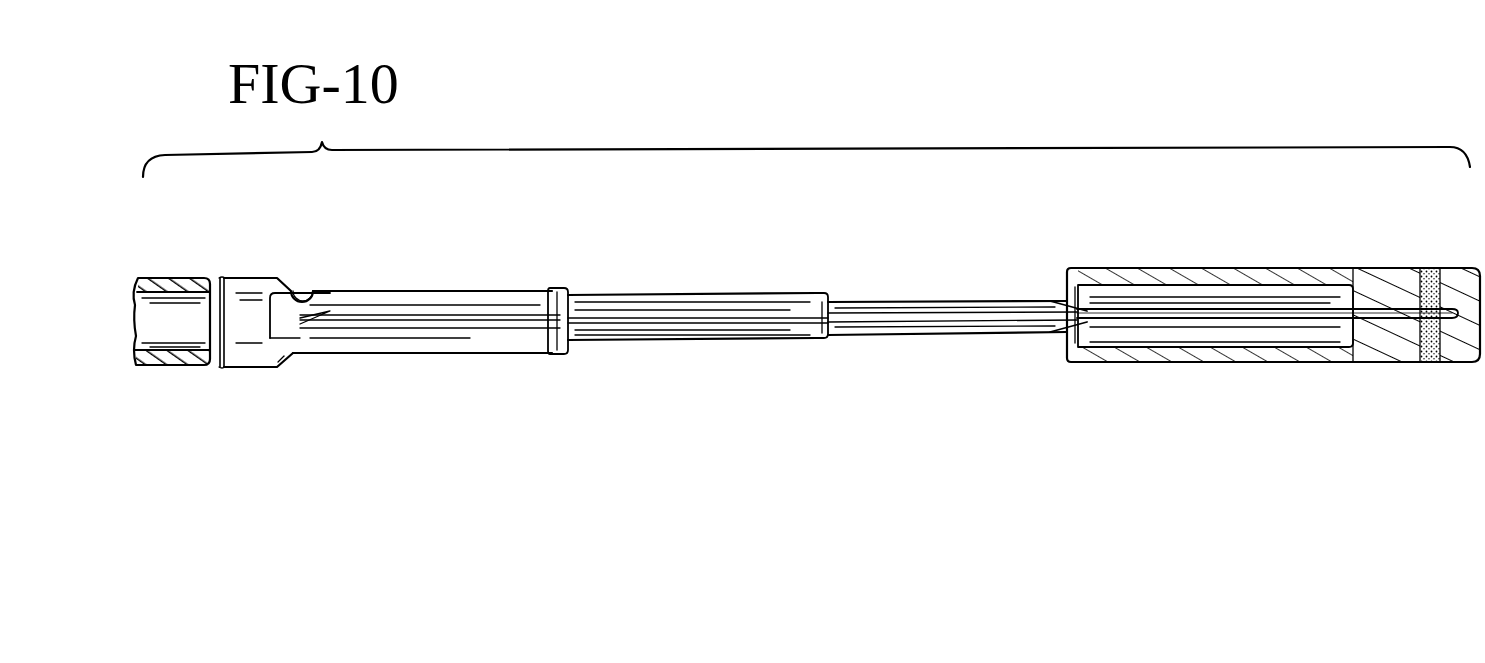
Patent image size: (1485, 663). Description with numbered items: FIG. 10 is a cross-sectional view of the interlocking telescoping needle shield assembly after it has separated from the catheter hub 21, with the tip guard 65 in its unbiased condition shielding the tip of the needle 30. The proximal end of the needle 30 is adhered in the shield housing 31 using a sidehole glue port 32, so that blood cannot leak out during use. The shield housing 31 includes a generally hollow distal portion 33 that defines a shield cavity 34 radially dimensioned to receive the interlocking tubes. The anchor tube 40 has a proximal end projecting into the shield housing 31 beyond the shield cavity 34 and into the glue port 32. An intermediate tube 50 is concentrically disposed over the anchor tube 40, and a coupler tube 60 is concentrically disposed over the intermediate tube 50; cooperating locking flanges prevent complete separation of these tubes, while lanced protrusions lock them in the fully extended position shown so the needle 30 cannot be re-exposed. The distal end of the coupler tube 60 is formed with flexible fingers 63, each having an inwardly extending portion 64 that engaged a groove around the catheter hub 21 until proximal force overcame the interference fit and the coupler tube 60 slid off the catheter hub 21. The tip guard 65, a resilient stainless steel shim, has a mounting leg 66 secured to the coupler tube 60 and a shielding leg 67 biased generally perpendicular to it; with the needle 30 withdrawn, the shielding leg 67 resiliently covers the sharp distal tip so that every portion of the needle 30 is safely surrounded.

The catheter hub 21 is at (130, 268).
The needle 30 is at (610, 320).
The shield housing 31 is at (1387, 268).
The sidehole glue port 32 is at (1428, 268).
The hollow distal portion 33 is at (1273, 279).
The shield cavity 34 is at (1223, 293).
The anchor tube 40 is at (1283, 323).
The intermediate tube 50 is at (732, 295).
The coupler tube 60 is at (443, 288).
The flexible fingers 63 is at (291, 291).
The inwardly extending portion 64 is at (221, 278).
The tip guard 65 is at (237, 320).
The mounting leg 66 is at (303, 300).
The shielding leg 67 is at (272, 338).